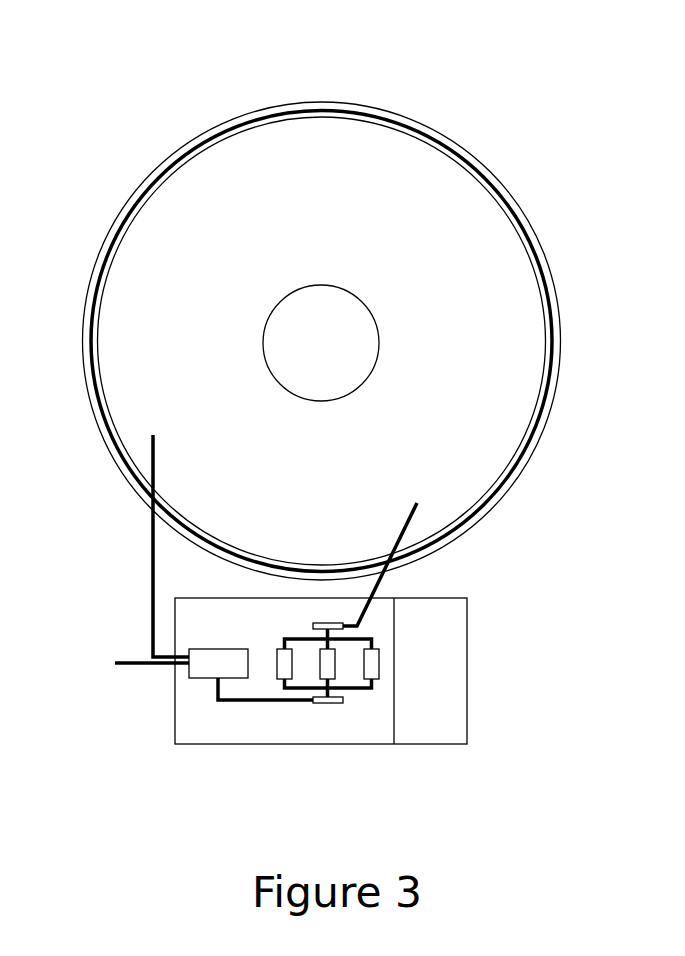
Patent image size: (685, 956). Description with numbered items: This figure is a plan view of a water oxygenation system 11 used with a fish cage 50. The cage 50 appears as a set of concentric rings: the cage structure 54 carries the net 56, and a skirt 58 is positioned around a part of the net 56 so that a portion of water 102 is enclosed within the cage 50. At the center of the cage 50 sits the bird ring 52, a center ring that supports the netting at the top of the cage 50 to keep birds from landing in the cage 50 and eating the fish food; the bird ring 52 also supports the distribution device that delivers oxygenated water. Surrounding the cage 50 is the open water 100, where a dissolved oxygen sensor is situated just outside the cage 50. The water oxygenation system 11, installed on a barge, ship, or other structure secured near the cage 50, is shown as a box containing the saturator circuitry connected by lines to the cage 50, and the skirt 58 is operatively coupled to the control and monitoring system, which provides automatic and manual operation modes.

The water oxygenation system 11 is at (225, 725).
The cage 50 is at (198, 126).
The bird ring 52 is at (287, 290).
The cage structure 54 is at (546, 277).
The net 56 is at (538, 413).
The skirt 58 is at (563, 344).
The open water 100 is at (57, 569).
The water 102 is at (444, 429).